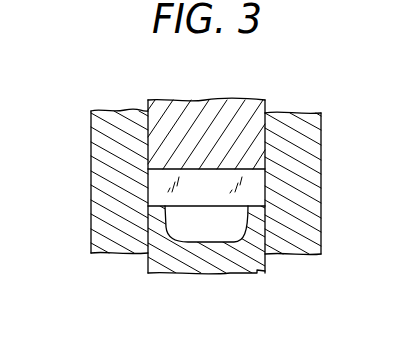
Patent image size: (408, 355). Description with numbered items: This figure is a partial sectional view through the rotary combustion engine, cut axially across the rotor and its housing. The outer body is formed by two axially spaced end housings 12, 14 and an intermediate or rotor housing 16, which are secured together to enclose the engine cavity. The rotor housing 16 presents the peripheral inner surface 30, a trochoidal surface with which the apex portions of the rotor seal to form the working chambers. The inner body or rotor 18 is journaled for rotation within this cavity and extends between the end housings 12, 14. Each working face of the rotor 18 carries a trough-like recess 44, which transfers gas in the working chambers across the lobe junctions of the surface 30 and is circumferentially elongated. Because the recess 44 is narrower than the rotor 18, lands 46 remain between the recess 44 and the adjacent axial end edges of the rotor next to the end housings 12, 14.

The end housing 12 is at (100, 155).
The end housing 14 is at (299, 143).
The intermediate or rotor housing 16 is at (229, 100).
The rotor 18 is at (252, 267).
The peripheral inner surface 30 is at (217, 171).
The trough-like recess 44 is at (185, 237).
The lands 46 is at (161, 206).